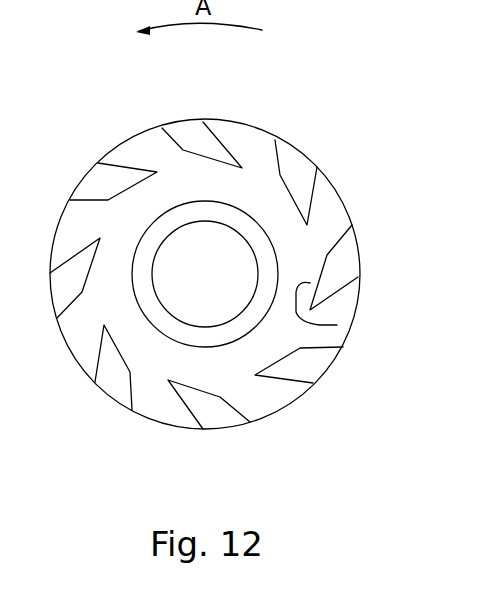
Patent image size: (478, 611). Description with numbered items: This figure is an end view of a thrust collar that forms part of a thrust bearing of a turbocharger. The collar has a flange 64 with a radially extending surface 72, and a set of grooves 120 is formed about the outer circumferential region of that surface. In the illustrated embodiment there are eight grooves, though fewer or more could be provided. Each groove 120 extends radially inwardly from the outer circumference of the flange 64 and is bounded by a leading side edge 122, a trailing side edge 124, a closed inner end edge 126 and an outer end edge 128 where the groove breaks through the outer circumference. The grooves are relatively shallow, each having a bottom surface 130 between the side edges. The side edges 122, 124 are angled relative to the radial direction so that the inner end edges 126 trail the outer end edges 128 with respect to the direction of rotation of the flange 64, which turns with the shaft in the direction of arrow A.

The flange 64 is at (252, 124).
The radially extending surface 72 is at (322, 207).
The groove 120 is at (83, 188).
The leading side edge 122 is at (344, 223).
The trailing side edge 124 is at (340, 290).
The closed inner end edge 126 is at (337, 325).
The outer end edge 128 is at (358, 262).
The bottom surface 130 is at (290, 163).